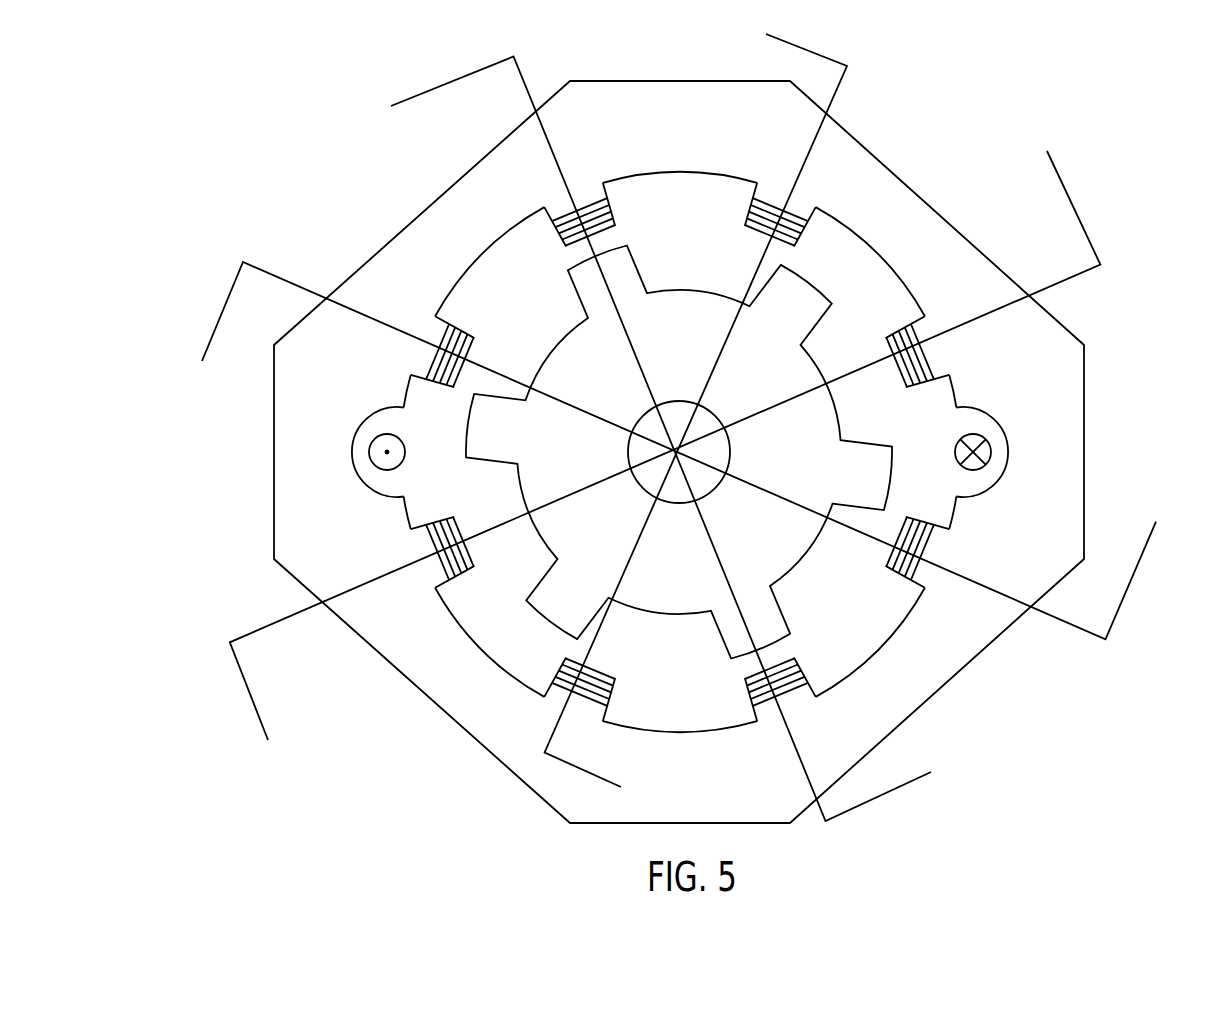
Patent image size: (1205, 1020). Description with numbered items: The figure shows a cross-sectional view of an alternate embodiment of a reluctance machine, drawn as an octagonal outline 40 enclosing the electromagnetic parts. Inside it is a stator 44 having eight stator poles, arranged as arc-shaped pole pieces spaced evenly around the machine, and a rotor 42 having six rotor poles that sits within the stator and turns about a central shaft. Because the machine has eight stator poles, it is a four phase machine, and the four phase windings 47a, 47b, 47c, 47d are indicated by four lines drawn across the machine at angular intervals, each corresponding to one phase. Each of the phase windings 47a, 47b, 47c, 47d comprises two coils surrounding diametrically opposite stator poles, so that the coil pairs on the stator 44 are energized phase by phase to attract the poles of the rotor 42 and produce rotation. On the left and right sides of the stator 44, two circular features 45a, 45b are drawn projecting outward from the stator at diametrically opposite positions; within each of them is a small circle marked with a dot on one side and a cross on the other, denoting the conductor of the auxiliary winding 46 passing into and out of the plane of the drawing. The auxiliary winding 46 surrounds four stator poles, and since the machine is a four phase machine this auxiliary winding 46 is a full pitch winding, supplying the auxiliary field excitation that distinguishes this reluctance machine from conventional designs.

The reluctance machine 40 is at (425, 185).
The rotor 42 is at (948, 381).
The stator 44 is at (721, 419).
The auxiliary field pole 45a is at (349, 420).
The auxiliary field pole 45b is at (1010, 425).
The auxiliary winding 46 is at (374, 483).
The phase winding 47a is at (412, 85).
The phase winding 47b is at (766, 43).
The phase winding 47c is at (1072, 172).
The phase winding 47d is at (213, 303).